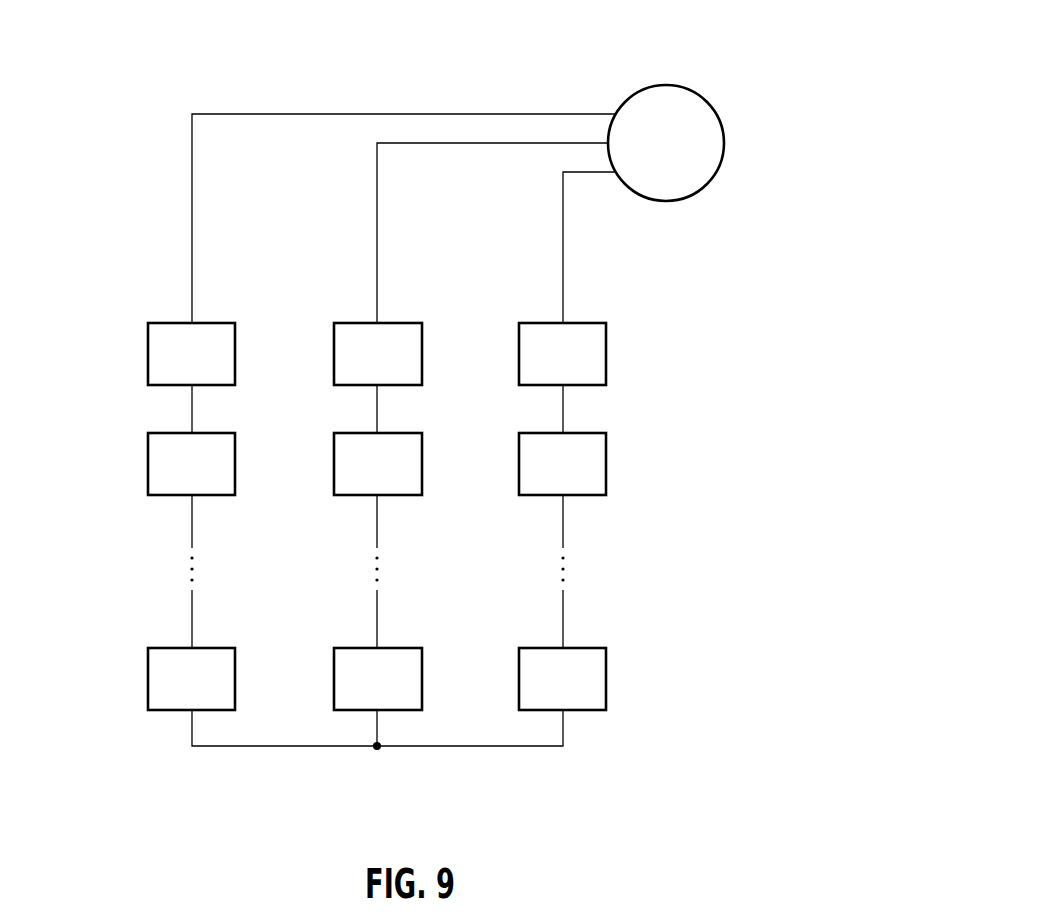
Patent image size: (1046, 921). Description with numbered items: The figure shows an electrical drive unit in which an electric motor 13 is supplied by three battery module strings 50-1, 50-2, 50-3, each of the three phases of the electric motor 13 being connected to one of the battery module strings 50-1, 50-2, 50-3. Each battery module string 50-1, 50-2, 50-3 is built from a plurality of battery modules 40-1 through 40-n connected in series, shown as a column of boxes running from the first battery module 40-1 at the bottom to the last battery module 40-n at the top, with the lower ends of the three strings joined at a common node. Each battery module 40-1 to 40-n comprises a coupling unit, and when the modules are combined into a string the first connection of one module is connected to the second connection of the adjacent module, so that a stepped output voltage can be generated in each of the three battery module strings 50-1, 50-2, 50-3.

The electric motor 13 is at (668, 84).
The battery module string 50-1 is at (174, 480).
The battery module string 50-2 is at (416, 318).
The battery module string 50-3 is at (596, 318).
The battery module 40-n is at (148, 357).
The battery module 40-1 is at (148, 691).